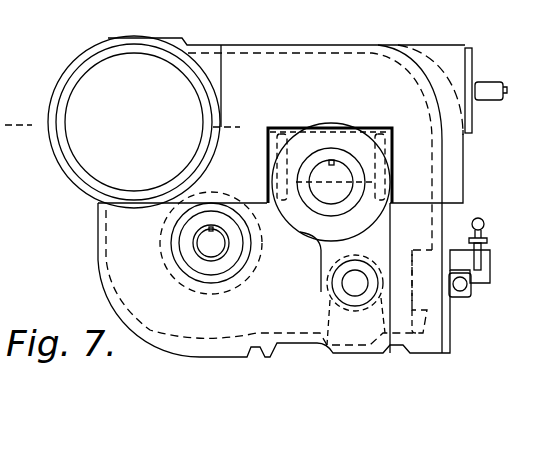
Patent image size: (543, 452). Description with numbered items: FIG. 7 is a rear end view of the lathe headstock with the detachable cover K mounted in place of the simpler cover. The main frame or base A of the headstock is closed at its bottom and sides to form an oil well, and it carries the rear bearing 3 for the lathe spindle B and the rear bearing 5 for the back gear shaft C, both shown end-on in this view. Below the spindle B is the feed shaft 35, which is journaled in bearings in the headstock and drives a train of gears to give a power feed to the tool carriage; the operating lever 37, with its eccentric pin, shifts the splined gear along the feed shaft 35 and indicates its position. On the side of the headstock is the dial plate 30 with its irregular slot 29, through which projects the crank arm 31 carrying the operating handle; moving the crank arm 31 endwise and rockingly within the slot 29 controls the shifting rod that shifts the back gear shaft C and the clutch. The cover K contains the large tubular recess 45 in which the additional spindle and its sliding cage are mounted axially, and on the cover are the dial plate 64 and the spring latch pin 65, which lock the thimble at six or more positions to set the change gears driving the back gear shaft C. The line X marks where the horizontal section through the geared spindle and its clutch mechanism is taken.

The detachable cover K is at (283, 38).
The main frame or base of the headstock A is at (91, 260).
The tubular recess 45 is at (72, 106).
The section line x x X is at (128, 127).
The dial plate 64 is at (476, 43).
The spring latch pin 65 is at (494, 88).
The rear bearing 3 is at (350, 200).
The lathe spindle B is at (331, 182).
The rear bearing 5 is at (200, 253).
The back gear shaft C is at (211, 243).
The feed shaft 35 is at (352, 290).
The crank arm 31 is at (481, 209).
The irregular slot 29 is at (474, 243).
The dial plate 30 is at (492, 266).
The operating lever 37 is at (462, 290).